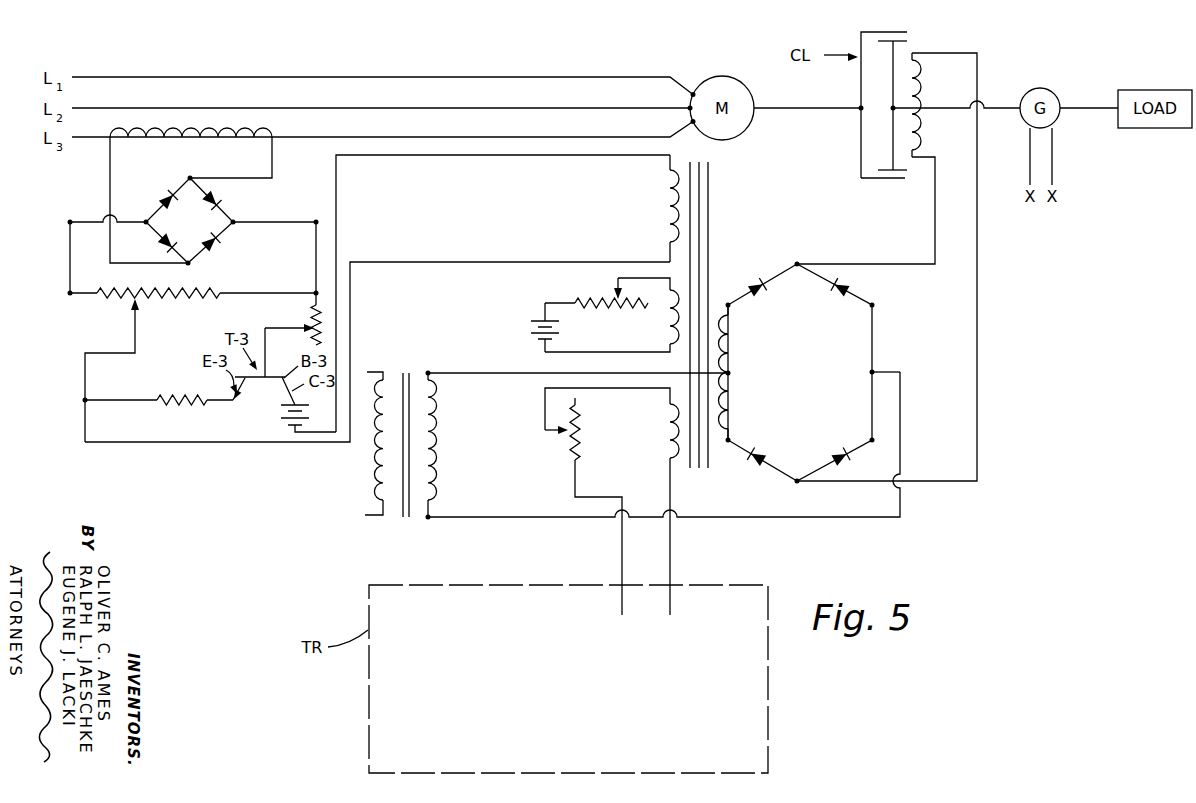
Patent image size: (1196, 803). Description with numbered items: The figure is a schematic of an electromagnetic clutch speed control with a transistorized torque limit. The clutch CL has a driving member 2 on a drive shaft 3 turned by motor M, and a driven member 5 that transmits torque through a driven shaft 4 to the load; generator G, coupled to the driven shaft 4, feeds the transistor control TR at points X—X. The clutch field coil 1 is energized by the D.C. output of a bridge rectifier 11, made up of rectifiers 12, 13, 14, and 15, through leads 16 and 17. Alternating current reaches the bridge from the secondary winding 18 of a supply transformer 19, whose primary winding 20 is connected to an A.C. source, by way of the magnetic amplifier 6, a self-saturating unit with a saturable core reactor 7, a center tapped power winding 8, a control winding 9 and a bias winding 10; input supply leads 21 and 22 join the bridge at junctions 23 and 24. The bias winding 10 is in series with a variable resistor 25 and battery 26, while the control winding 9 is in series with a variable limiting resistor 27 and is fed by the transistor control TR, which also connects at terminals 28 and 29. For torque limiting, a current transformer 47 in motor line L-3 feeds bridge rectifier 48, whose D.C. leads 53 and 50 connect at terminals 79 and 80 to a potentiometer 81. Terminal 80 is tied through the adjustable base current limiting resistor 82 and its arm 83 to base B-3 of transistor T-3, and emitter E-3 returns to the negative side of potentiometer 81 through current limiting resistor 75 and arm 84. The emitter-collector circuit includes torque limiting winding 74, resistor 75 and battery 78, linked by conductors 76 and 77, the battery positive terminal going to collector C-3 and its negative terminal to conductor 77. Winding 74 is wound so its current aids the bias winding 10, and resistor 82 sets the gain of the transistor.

The field coil 1 is at (924, 101).
The driving member 2 is at (893, 180).
The drive shaft 3 is at (808, 104).
The driven shaft 4 is at (952, 110).
The driven member 5 is at (907, 40).
The magnetic amplifier 6 is at (718, 224).
The saturable core reactor 7 is at (700, 467).
The center tapped power winding 8 is at (730, 338).
The control winding 9 is at (664, 447).
The bias winding 10 is at (667, 321).
The bridge rectifier 11 is at (800, 373).
The rectifier 12 is at (763, 290).
The rectifier 13 is at (840, 293).
The rectifier 14 is at (770, 455).
The rectifier 15 is at (827, 456).
The lead 16 is at (888, 263).
The lead 17 is at (945, 484).
The secondary winding 18 is at (441, 472).
The supply transformer 19 is at (406, 368).
The primary winding 20 is at (377, 486).
The input supply lead 21 is at (476, 376).
The input supply lead 22 is at (520, 521).
The junction 23 is at (733, 373).
The junction 24 is at (870, 374).
The variable resistor 25 is at (597, 306).
The battery 26 is at (530, 333).
The variable limiting resistor 27 is at (579, 448).
The terminal 28 is at (429, 370).
The terminal 29 is at (426, 521).
The current transformer 47 is at (158, 140).
The bridge rectifier 48 is at (193, 221).
The conductor 50 is at (70, 256).
The conductor 53 is at (282, 221).
The torque limiting winding 74 is at (666, 203).
The current limiting resistor 75 is at (177, 399).
The conductor 76 is at (538, 260).
The conductor 77 is at (545, 157).
The battery 78 is at (284, 419).
The terminal 79 is at (70, 297).
The terminal 80 is at (316, 292).
The potentiometer 81 is at (186, 298).
The adjustable base current limiting resistor 82 is at (314, 316).
The adjustable arm 83 is at (285, 331).
The arm 84 is at (135, 327).